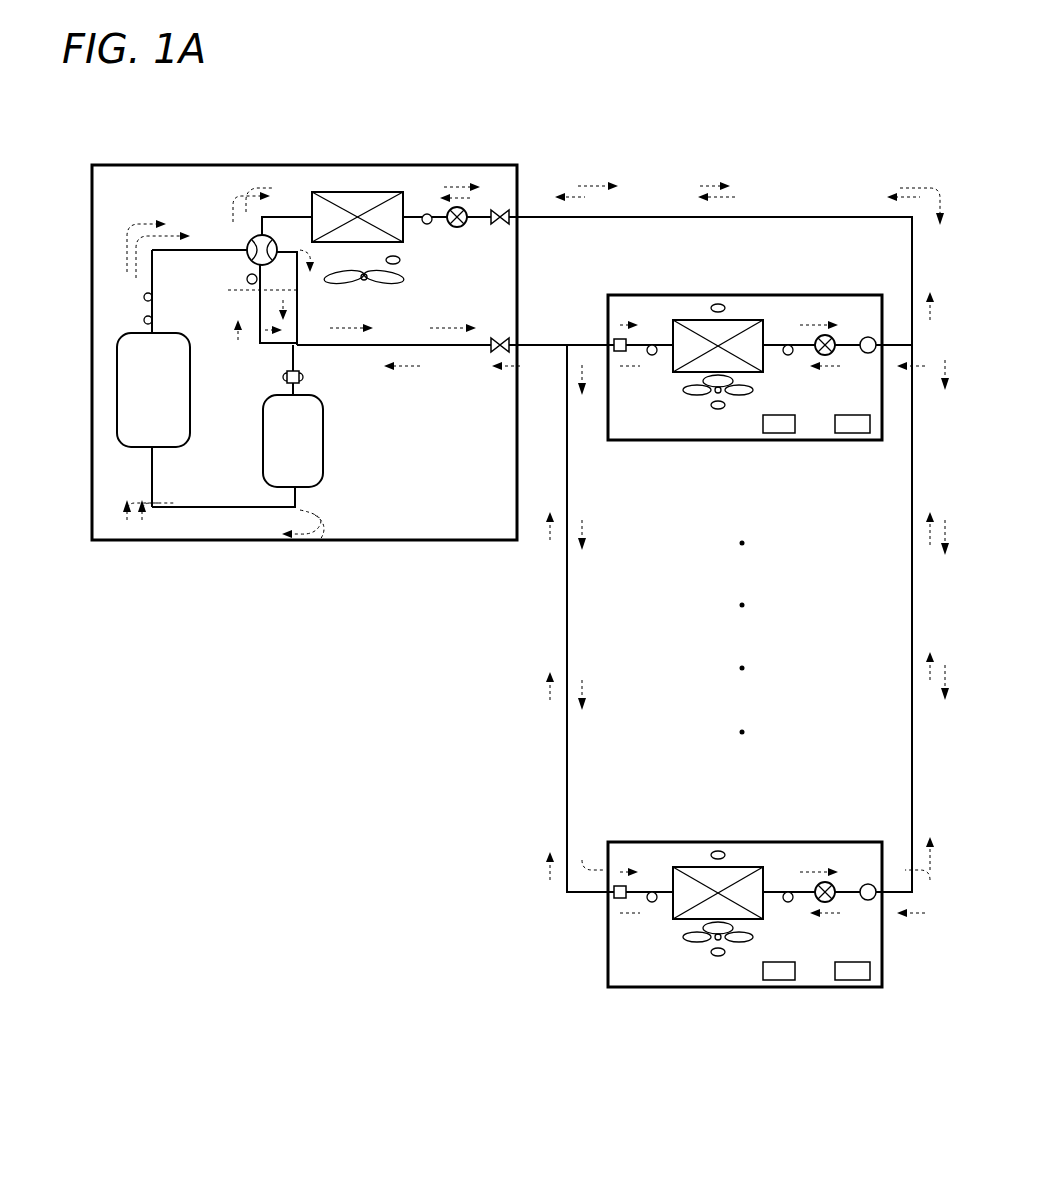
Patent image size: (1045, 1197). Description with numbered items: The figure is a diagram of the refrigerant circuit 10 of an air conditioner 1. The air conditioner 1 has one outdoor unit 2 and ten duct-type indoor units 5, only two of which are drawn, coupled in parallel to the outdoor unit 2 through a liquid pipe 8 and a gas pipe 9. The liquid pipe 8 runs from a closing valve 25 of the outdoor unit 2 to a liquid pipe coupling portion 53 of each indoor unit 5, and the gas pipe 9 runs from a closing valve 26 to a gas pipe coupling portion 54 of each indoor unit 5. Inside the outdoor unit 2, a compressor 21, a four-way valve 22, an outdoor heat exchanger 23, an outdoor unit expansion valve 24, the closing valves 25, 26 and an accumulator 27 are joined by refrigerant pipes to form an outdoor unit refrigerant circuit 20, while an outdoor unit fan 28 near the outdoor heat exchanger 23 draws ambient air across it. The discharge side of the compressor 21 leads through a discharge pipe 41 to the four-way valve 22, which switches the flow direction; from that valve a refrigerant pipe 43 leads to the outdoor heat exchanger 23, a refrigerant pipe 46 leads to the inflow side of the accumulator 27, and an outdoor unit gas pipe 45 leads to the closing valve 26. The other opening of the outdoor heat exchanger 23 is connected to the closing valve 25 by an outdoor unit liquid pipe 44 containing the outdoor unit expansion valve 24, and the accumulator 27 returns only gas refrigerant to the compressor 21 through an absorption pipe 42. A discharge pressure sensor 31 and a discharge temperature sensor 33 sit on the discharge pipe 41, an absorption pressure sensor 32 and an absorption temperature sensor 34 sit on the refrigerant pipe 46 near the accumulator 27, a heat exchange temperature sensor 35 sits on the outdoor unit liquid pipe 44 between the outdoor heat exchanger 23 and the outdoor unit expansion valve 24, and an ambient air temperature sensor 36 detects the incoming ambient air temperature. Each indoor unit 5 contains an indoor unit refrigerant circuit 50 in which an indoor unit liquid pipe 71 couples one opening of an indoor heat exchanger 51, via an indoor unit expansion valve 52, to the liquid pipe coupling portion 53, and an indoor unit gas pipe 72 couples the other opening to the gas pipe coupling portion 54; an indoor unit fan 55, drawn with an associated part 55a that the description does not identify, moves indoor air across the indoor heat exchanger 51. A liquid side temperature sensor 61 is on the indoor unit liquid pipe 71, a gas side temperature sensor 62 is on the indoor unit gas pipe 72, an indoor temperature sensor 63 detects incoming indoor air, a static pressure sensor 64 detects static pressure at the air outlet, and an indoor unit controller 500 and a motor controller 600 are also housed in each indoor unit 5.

The air conditioner 1 is at (852, 122).
The outdoor unit 2 is at (304, 340).
The indoor unit 5 is at (745, 630).
The liquid pipe 8 is at (678, 214).
The gas pipe 9 is at (537, 343).
The refrigerant circuit 10 is at (796, 198).
The outdoor unit refrigerant circuit 20 is at (388, 411).
The compressor 21 is at (117, 380).
The four-way valve 22 is at (246, 247).
The outdoor heat exchanger 23 is at (355, 192).
The outdoor unit expansion valve 24 is at (459, 206).
The closing valve 25 is at (510, 207).
The closing valve 26 is at (501, 336).
The accumulator 27 is at (317, 490).
The outdoor unit fan 28 is at (377, 288).
The discharge pressure sensor 31 is at (145, 319).
The absorption pressure sensor 32 is at (286, 374).
The discharge temperature sensor 33 is at (145, 296).
The absorption temperature sensor 34 is at (307, 375).
The heat exchange temperature sensor 35 is at (428, 213).
The ambient air temperature sensor 36 is at (400, 262).
The discharge pipe 41 is at (212, 249).
The absorption pipe 42 is at (222, 508).
The refrigerant pipe 43 is at (292, 215).
The outdoor unit liquid pipe 44 is at (500, 208).
The outdoor unit gas pipe 45 is at (447, 349).
The refrigerant pipe 46 is at (248, 281).
The indoor unit refrigerant circuit 50 is at (830, 372).
The indoor heat exchanger 51 is at (703, 321).
The indoor unit expansion valve 52 is at (822, 335).
The liquid pipe coupling portion 53 is at (868, 337).
The gas pipe coupling portion 54 is at (624, 352).
The indoor unit fan 55 is at (704, 395).
The fan motor 55a is at (693, 326).
The liquid side temperature sensor 61 is at (792, 355).
The gas side temperature sensor 62 is at (654, 355).
The indoor temperature sensor 63 is at (723, 305).
The static pressure sensor 64 is at (722, 409).
The indoor unit liquid pipe 71 is at (776, 344).
The indoor unit gas pipe 72 is at (668, 344).
The indoor unit controller 500 is at (850, 434).
The motor controller 600 is at (776, 434).